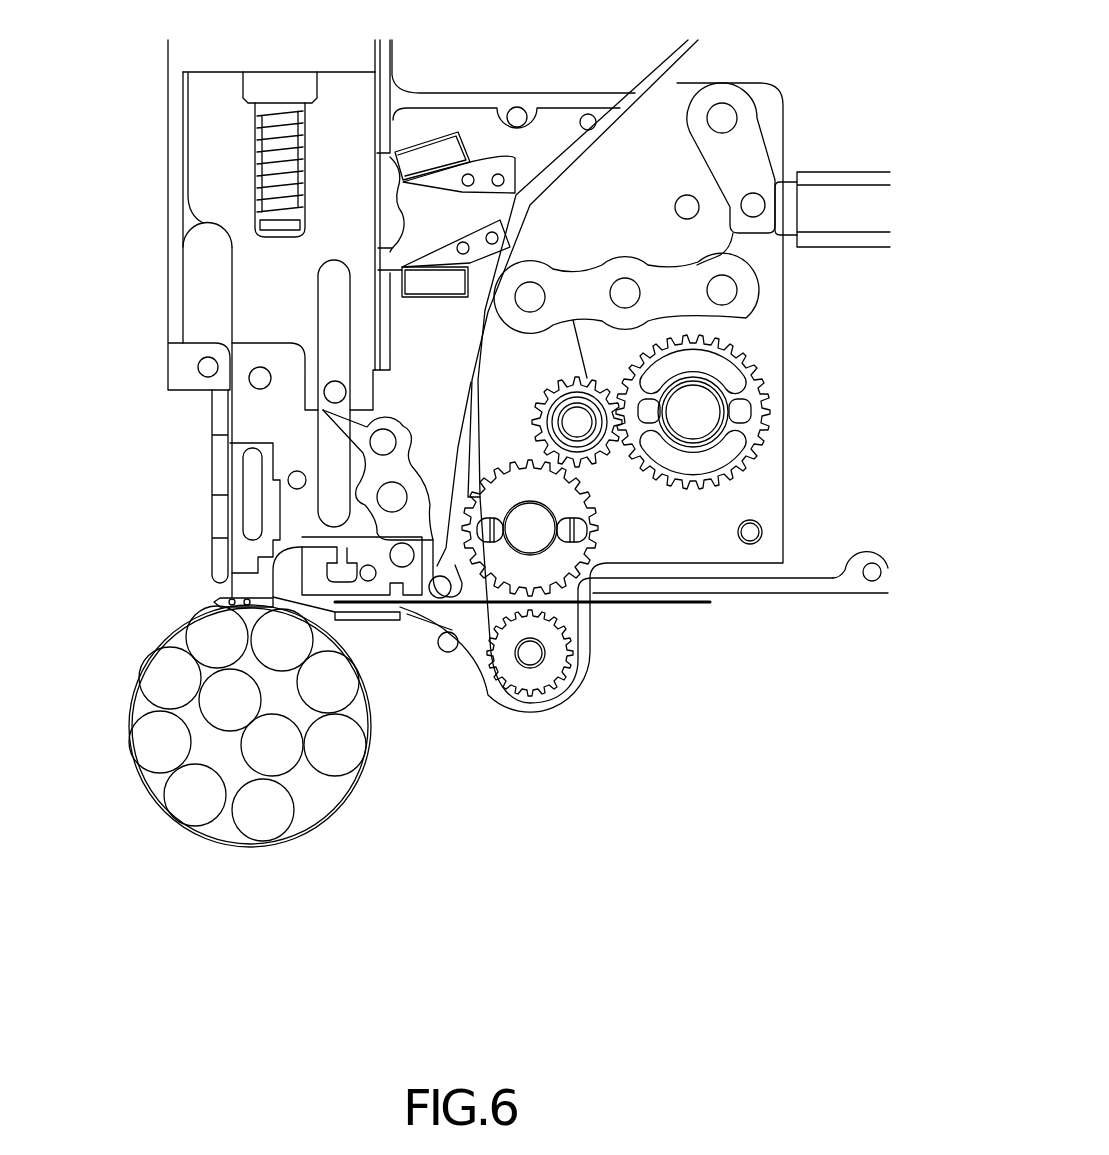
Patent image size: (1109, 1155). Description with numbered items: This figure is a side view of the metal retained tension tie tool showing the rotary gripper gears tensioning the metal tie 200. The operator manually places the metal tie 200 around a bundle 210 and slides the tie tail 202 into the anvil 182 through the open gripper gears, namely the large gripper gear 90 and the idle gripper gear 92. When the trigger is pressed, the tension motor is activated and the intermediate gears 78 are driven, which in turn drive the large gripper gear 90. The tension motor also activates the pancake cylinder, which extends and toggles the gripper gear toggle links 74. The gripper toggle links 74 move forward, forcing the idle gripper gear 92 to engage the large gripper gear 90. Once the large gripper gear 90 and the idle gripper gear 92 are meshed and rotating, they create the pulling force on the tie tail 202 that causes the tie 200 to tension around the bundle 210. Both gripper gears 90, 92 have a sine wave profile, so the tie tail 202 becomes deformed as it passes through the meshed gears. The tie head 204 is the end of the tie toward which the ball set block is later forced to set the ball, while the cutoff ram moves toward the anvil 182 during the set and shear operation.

The gripper gear toggle links 74 is at (740, 138).
The intermediate gears 78 is at (748, 388).
The large gripper gear 90 is at (573, 550).
The idle gripper gear 92 is at (530, 687).
The anvil 182 is at (372, 627).
The metal tie 200 is at (323, 823).
The tie tail 202 is at (652, 604).
The tie head 204 is at (217, 600).
The bundle 210 is at (265, 818).